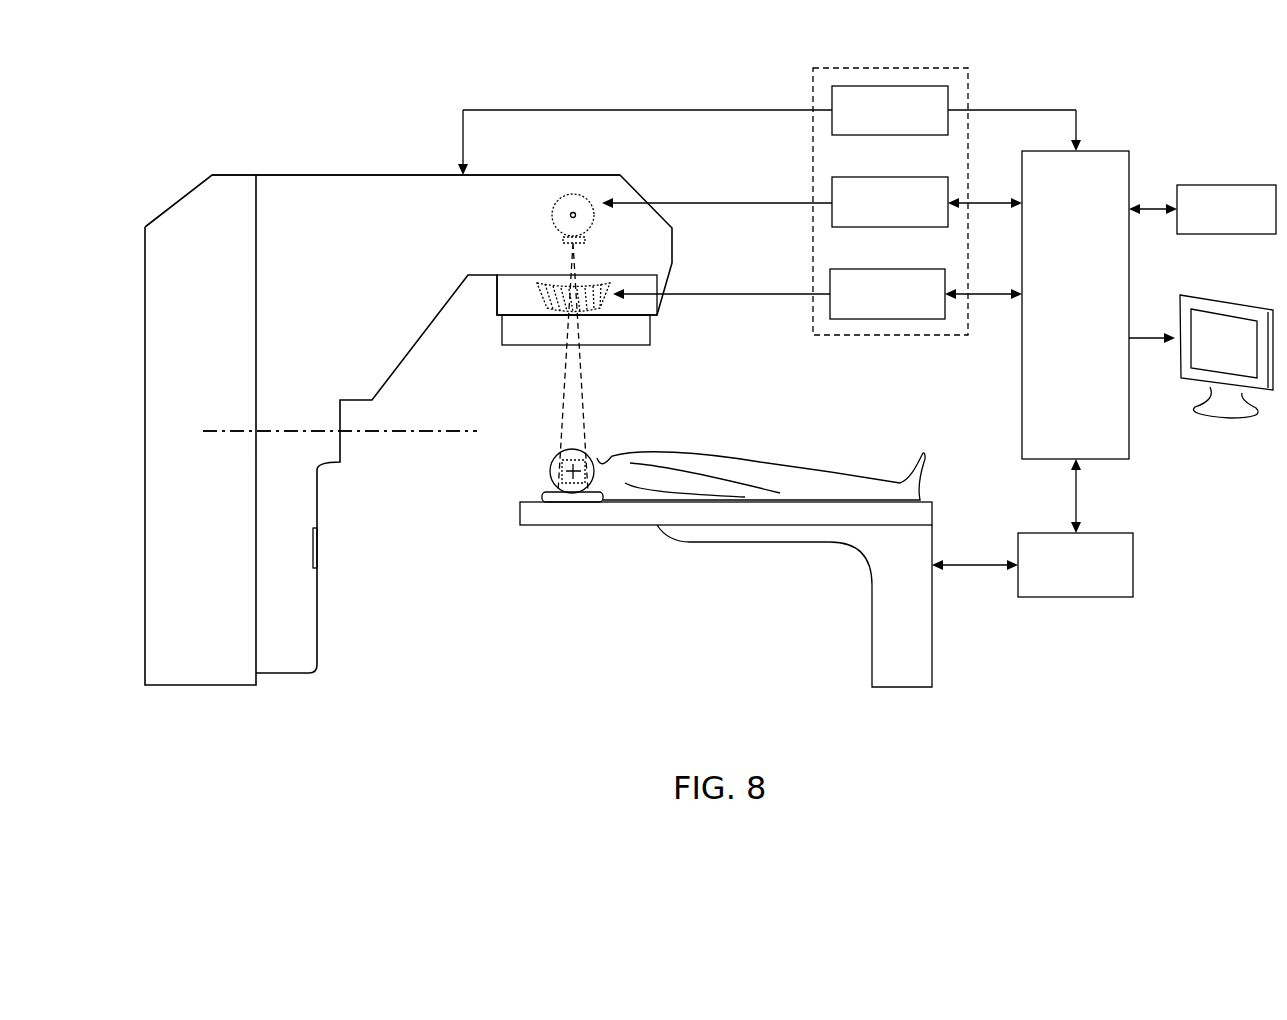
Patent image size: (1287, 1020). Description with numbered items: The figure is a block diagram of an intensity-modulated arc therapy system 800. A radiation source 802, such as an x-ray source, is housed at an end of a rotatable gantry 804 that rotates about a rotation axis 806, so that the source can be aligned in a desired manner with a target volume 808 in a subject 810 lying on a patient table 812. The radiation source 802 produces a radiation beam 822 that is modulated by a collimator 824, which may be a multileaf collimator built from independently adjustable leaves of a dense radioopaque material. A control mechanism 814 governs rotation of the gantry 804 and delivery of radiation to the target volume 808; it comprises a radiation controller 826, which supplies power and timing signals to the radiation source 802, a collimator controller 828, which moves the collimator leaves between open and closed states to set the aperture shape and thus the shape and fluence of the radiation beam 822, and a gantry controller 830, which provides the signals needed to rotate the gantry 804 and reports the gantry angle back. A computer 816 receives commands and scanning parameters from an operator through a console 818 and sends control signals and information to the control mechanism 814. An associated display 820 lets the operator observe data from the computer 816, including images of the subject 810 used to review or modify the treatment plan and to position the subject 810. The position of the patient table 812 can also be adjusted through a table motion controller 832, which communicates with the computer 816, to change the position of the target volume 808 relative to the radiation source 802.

The intensity-modulated arc therapy system 800 is at (216, 158).
The radiation source 802 is at (573, 194).
The rotatable gantry 804 is at (345, 175).
The rotation axis 806 is at (428, 431).
The target volume 808 is at (565, 460).
The subject 810 is at (663, 452).
The patient table 812 is at (520, 515).
The control mechanism 814 is at (890, 335).
The computer 816 is at (1130, 172).
The console 818 is at (1226, 234).
The display 820 is at (1222, 297).
The radiation beam 822 is at (585, 418).
The collimator 824 is at (537, 292).
The radiation controller 826 is at (893, 177).
The collimator controller 828 is at (888, 269).
The gantry controller 830 is at (888, 135).
The table motion controller 832 is at (1133, 565).